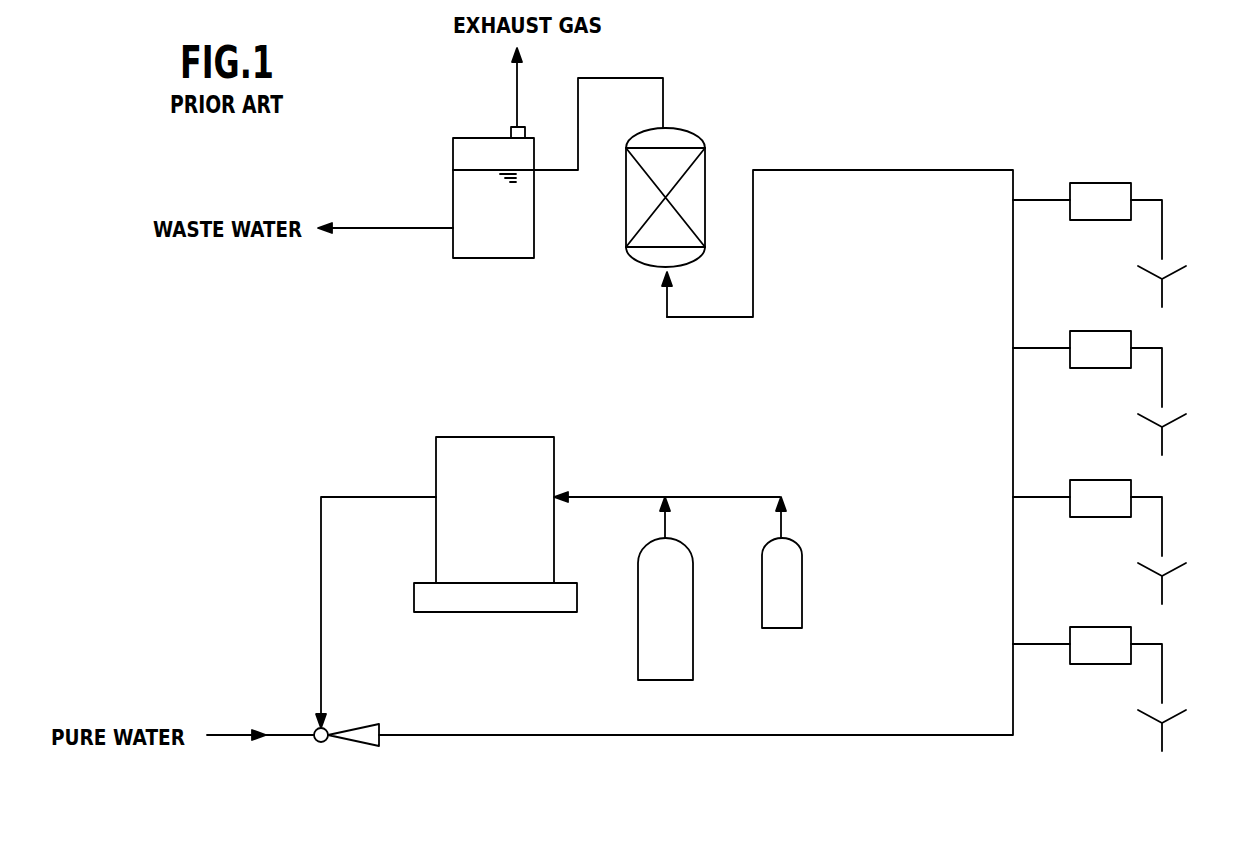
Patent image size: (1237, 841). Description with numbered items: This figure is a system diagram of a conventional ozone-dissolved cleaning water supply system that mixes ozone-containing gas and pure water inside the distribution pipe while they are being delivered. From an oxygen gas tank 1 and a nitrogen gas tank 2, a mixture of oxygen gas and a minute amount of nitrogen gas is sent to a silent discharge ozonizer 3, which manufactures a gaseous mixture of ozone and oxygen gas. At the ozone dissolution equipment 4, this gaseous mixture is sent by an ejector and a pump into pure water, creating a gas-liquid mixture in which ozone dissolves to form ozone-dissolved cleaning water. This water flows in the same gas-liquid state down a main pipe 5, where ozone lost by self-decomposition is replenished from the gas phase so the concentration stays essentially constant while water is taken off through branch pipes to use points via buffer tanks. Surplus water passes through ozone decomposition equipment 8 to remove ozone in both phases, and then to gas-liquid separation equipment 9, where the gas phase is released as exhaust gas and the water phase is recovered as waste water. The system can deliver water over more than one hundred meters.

The oxygen gas tank 1 is at (688, 653).
The nitrogen gas tank 2 is at (795, 597).
The silent discharge ozonizer 3 is at (492, 452).
The ozone dissolution equipment 4 is at (355, 750).
The main pipe 5 is at (858, 735).
The ozone decomposition equipment 8 is at (637, 203).
The gas-liquid separation equipment 9 is at (490, 247).